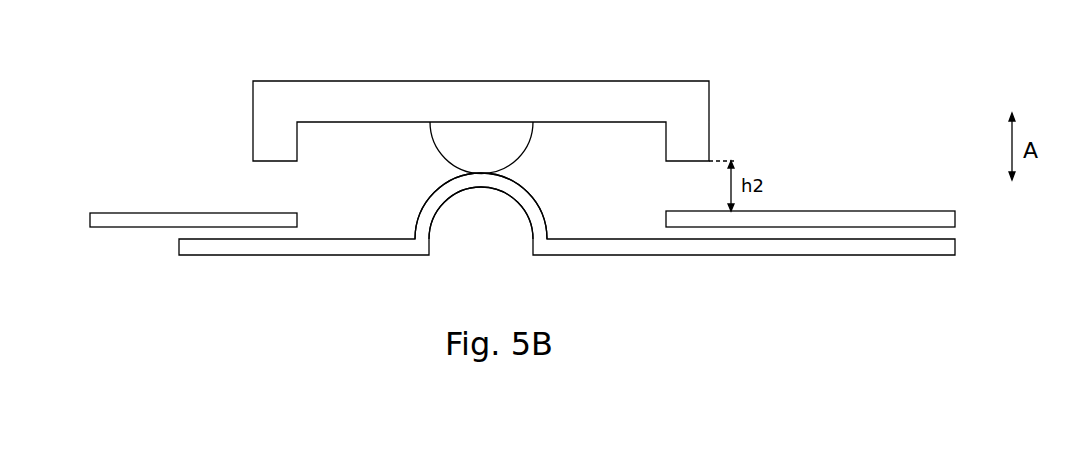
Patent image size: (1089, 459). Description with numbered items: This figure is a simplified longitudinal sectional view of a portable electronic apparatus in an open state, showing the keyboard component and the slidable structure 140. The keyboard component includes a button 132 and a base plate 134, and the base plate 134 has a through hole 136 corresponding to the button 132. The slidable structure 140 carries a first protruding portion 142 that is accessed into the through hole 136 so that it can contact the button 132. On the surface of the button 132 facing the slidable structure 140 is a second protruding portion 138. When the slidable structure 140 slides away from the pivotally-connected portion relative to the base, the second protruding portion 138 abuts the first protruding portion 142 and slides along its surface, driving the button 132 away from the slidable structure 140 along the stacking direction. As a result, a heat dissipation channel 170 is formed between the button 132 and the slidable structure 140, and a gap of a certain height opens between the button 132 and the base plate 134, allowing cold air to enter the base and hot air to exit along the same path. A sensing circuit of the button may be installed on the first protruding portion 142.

The button 132 is at (673, 88).
The base plate 134 is at (855, 220).
The through hole 136 is at (647, 229).
The second protruding portion 138 is at (483, 137).
The slidable structure 140 is at (316, 250).
The first protruding portion 142 is at (431, 228).
The heat dissipation channel 170 is at (650, 163).